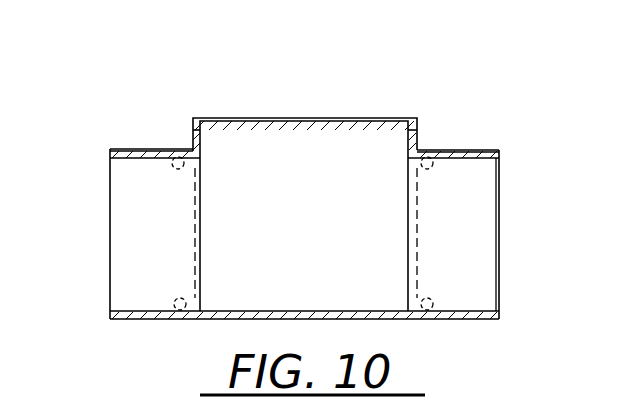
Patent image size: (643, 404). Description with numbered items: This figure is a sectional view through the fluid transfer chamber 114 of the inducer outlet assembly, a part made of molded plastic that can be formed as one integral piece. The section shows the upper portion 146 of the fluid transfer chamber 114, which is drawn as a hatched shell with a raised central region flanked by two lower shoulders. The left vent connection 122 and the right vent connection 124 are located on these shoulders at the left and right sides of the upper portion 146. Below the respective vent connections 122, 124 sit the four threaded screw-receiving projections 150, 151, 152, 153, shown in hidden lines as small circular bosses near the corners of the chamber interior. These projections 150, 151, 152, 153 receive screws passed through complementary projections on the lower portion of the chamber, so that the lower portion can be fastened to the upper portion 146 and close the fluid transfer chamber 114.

The fluid transfer chamber 114 is at (304, 116).
The left vent connection 122 is at (138, 148).
The right vent connection 124 is at (461, 148).
The upper portion 146 is at (505, 232).
The threaded screw-receiving projection 150 is at (434, 301).
The threaded screw-receiving projection 151 is at (434, 166).
The threaded screw-receiving projection 152 is at (173, 301).
The threaded screw-receiving projection 153 is at (171, 167).